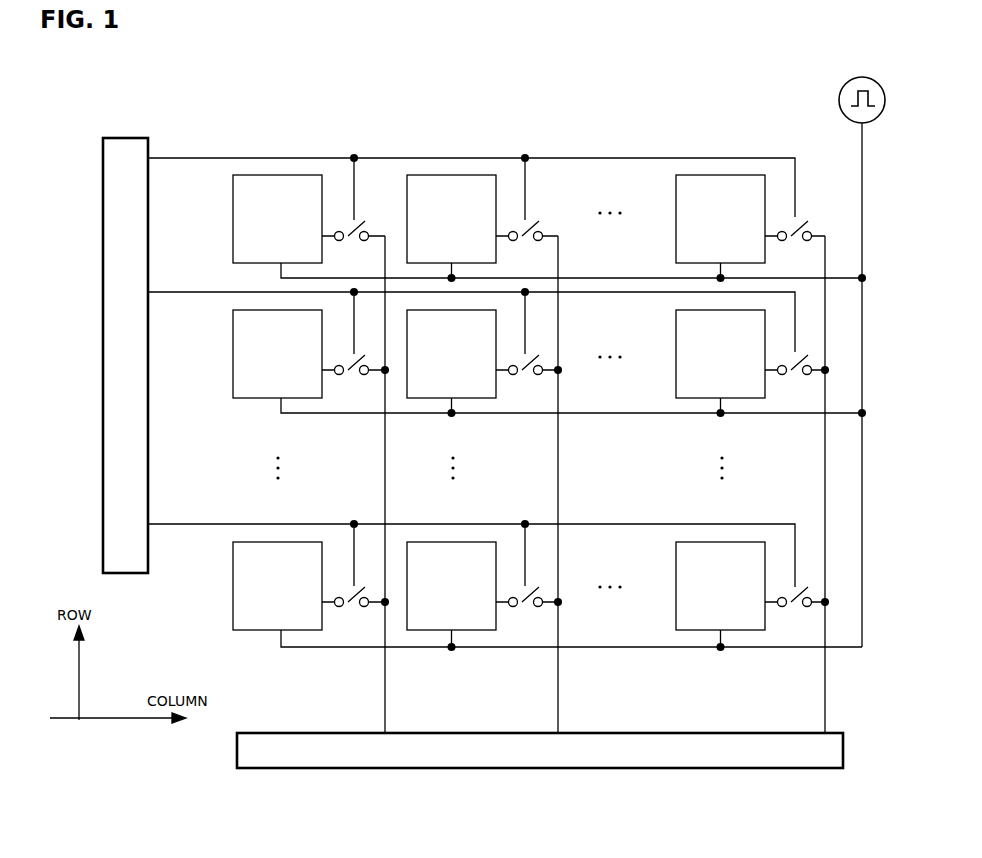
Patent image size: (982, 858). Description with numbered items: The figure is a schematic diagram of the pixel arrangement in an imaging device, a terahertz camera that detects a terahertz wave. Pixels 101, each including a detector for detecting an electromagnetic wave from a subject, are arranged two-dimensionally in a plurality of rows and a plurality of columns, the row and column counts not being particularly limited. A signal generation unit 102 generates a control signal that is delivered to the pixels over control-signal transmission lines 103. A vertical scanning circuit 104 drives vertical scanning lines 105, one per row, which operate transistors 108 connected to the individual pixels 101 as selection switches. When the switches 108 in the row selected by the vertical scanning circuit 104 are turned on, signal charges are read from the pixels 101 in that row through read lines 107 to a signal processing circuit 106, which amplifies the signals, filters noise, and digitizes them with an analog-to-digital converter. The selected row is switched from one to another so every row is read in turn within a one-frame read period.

The pixel 101 is at (277, 178).
The signal generation unit 102 is at (840, 92).
The control-signal transmission line 103 is at (578, 274).
The vertical scanning circuit 104 is at (118, 160).
The vertical scanning line 105 is at (163, 156).
The signal processing circuit 106 is at (262, 757).
The read line 107 is at (383, 490).
The transistor 108 is at (360, 222).